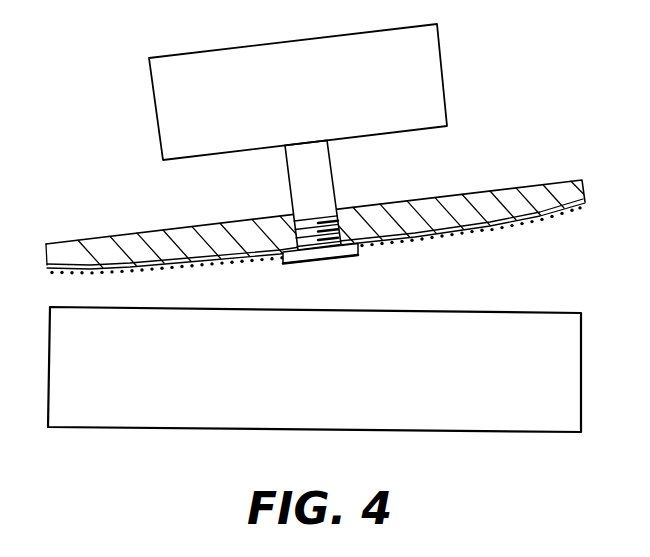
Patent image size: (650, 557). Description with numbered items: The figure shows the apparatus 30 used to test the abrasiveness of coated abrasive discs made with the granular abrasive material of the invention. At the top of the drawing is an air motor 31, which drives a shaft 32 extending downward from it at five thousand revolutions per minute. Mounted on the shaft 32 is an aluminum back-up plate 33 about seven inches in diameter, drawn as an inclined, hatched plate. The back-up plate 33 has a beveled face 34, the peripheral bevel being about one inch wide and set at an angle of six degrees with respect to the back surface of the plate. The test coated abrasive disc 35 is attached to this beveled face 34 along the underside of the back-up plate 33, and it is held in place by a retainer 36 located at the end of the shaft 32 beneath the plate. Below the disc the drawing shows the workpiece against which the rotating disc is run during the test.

The apparatus 30 is at (317, 200).
The air motor 31 is at (438, 58).
The shaft 32 is at (293, 182).
The back-up plate 33 is at (552, 188).
The beveled face 34 is at (538, 214).
The test coated abrasive disc 35 is at (487, 232).
The retainer 36 is at (355, 256).